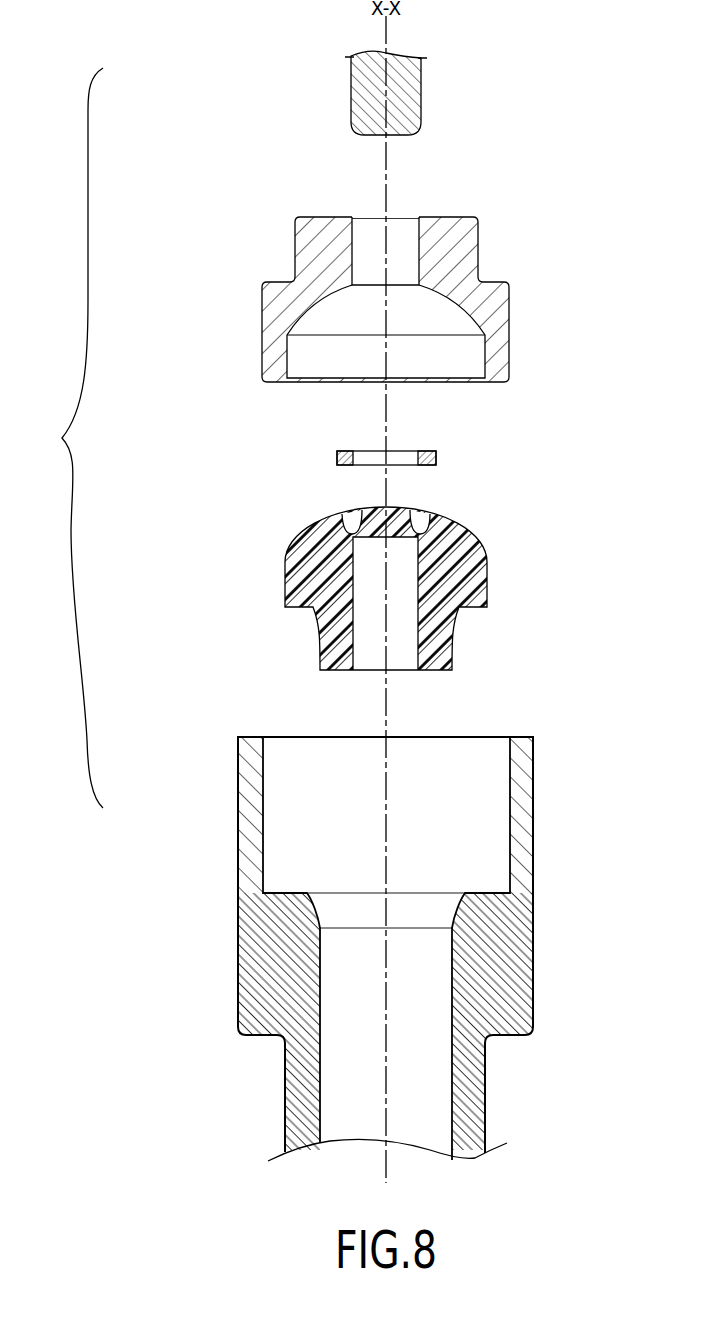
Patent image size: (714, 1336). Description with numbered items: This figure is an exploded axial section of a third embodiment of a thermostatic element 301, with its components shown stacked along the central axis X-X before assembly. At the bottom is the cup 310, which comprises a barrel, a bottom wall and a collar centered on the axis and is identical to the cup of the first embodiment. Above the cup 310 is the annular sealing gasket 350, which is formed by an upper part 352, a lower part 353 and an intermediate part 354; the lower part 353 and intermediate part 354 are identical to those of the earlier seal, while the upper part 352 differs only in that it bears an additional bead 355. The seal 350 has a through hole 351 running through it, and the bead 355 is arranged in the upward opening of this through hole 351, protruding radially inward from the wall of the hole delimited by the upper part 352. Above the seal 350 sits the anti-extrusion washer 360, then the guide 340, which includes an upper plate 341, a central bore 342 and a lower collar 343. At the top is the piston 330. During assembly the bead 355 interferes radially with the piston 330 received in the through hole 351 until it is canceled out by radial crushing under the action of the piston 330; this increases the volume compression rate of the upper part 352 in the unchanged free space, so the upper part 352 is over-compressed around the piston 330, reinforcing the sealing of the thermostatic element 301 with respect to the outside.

The thermostatic element 301 is at (65, 438).
The cup 310 is at (223, 850).
The piston 330 is at (337, 78).
The guide 340 is at (355, 267).
The upper plate 341 is at (458, 226).
The central bore 342 is at (418, 237).
The lower collar 343 is at (497, 320).
The annular sealing gasket 350 is at (330, 575).
The through hole 351 is at (408, 650).
The upper part 352 is at (440, 528).
The lower part 353 is at (466, 593).
The intermediate part 354 is at (450, 574).
The bead 355 is at (418, 518).
The anti-extrusion washer 360 is at (333, 458).